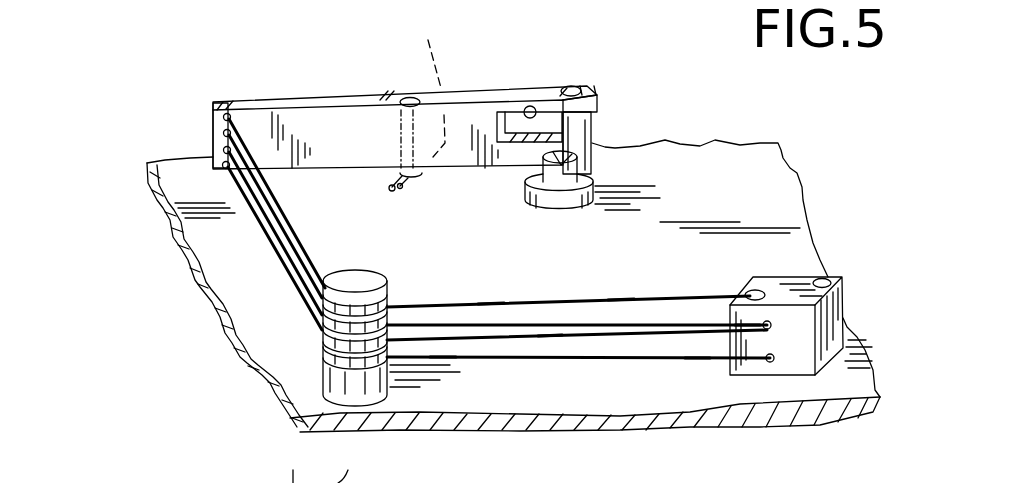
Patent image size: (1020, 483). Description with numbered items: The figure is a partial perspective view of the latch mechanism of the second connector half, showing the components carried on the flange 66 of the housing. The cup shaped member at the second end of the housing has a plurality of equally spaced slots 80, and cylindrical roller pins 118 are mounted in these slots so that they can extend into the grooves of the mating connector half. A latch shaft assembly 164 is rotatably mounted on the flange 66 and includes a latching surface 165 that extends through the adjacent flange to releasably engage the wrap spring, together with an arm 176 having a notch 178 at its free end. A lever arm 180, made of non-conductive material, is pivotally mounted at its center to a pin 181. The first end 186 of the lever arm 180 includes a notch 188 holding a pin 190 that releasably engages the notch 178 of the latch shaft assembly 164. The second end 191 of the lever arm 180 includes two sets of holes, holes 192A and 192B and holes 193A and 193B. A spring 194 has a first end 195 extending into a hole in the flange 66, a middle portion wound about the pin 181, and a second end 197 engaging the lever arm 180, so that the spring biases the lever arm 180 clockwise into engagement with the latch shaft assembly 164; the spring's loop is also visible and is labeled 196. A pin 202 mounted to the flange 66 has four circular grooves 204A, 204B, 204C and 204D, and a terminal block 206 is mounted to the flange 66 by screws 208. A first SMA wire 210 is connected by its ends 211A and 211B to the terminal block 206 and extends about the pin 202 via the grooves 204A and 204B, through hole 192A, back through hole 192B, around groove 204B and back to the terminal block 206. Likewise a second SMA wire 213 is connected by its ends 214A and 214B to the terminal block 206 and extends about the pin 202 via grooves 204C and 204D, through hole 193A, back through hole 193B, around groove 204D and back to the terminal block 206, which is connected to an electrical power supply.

The flange 66 is at (820, 414).
The slots 80 is at (354, 462).
The cylindrical roller pins 118 is at (295, 462).
The latch shaft assembly 164 is at (597, 166).
The latching surface 165 is at (577, 152).
The arm 176 is at (593, 118).
The notch 178 is at (595, 97).
The lever arm 180 is at (470, 97).
The pin 181 is at (410, 98).
The first end 186 is at (583, 95).
The notch 188 is at (535, 112).
The pin 190 is at (570, 88).
The second end 191 is at (215, 103).
The hole 192A is at (223, 117).
The hole 192B is at (223, 133).
The hole 193A is at (223, 150).
The hole 193B is at (223, 164).
The spring 194 is at (427, 177).
The first end 195 is at (392, 192).
The clip loop 196 is at (378, 188).
The second end 197 is at (430, 82).
The pin 202 is at (277, 394).
The circular groove 204A is at (323, 308).
The circular groove 204B is at (323, 325).
The circular groove 204C is at (323, 340).
The circular groove 204D is at (323, 355).
The terminal block 206 is at (846, 292).
The screws 208 is at (758, 292).
The first SMA wire 210 is at (491, 307).
The end 211A is at (620, 305).
The end 211B is at (745, 330).
The second SMA wire 213 is at (443, 362).
The end 214A is at (550, 340).
The end 214B is at (697, 360).